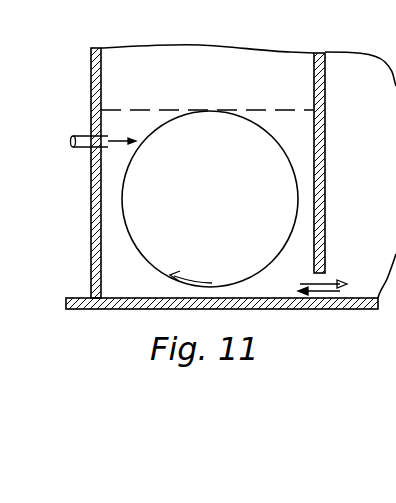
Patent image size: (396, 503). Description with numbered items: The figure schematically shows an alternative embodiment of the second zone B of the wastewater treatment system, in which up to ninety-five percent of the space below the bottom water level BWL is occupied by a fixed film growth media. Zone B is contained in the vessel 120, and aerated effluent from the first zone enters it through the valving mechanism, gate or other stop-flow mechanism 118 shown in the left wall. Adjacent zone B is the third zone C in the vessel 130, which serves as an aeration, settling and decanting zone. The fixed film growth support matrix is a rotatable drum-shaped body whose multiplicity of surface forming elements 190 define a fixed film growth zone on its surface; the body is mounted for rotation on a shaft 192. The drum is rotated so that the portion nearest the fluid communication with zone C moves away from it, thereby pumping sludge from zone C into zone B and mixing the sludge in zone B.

The vessel 120 is at (256, 58).
The surface forming elements 190 is at (266, 122).
The bottom water level BWL is at (152, 109).
The zone B is at (222, 76).
The zone C is at (372, 98).
The vessel 130 is at (390, 168).
The stop-flow mechanism 118 is at (76, 136).
The shaft 192 is at (212, 206).